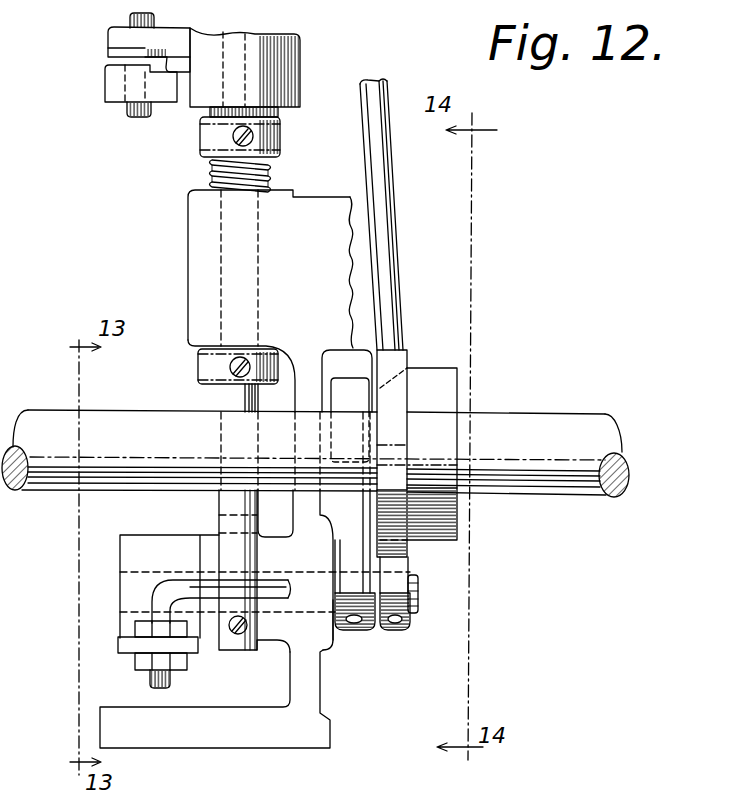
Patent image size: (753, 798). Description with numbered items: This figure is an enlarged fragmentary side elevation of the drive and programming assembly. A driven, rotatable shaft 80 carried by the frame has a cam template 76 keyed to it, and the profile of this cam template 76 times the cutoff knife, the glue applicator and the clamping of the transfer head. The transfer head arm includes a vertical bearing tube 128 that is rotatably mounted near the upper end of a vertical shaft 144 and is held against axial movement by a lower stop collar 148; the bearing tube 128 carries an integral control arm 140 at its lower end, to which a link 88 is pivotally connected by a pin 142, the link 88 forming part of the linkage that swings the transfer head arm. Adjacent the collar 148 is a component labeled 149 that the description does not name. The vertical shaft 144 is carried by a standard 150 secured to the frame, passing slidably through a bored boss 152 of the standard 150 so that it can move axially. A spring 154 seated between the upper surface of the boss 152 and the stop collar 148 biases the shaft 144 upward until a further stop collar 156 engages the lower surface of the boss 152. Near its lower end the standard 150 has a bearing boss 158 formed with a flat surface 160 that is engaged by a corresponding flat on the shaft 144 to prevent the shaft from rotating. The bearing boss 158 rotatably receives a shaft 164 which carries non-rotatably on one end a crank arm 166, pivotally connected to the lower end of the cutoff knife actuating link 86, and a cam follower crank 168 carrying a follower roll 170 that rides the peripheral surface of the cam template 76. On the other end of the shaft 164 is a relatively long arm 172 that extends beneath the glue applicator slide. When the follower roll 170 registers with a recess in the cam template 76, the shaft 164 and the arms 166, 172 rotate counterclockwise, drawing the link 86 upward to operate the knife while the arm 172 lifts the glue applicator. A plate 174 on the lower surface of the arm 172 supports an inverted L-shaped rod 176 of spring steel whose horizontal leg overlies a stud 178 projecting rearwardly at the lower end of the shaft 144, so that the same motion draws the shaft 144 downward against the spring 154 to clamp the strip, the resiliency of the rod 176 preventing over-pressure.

The cam template 76 is at (388, 478).
The driven rotatable shaft 80 is at (587, 423).
The cutoff knife actuating link 86 is at (395, 262).
The link 88 is at (108, 42).
The vertical bearing tube 128 is at (298, 48).
The control arm 140 is at (173, 87).
The pin 142 is at (128, 21).
The vertical shaft 144 is at (224, 404).
The lower stop collar 148 is at (283, 134).
The flange 149 is at (290, 111).
The standard 150 is at (320, 685).
The bored boss 152 is at (188, 221).
The spring 154 is at (272, 172).
The stop collar 156 is at (200, 364).
The bearing boss 158 is at (333, 633).
The flat surface 160 is at (283, 626).
The shaft 164 is at (440, 577).
The crank arm 166 is at (418, 598).
The cam follower crank 168 is at (347, 384).
The follower roll 170 is at (422, 369).
The arm 172 is at (138, 540).
The plate 174 is at (118, 645).
The inverted L-shaped rod 176 is at (180, 581).
The stud 178 is at (242, 640).